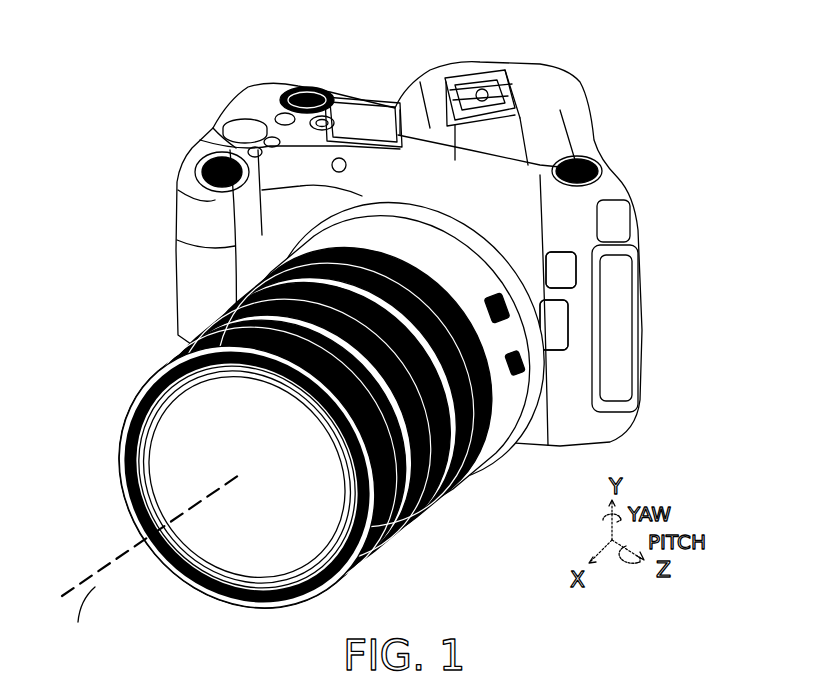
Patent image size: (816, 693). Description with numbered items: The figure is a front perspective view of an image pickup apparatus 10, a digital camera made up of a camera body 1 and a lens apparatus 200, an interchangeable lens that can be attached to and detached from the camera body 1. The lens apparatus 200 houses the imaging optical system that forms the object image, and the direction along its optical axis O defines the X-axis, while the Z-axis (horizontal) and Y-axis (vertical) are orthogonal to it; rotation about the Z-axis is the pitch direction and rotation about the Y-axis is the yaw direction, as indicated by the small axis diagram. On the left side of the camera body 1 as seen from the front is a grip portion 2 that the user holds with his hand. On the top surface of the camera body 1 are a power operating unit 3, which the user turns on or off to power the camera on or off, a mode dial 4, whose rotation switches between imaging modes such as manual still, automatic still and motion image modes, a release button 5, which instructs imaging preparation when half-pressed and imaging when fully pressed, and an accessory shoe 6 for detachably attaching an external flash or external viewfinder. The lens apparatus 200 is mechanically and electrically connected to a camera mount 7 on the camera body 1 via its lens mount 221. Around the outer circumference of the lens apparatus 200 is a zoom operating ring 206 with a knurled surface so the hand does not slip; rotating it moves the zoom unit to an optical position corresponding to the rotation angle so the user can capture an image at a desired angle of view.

The image pickup apparatus 10 is at (386, 337).
The camera body 1 is at (411, 232).
The grip portion 2 is at (185, 285).
The power operating unit 3 is at (590, 164).
The mode dial 4 is at (305, 88).
The release button 5 is at (210, 162).
The accessory shoe 6 is at (471, 92).
The camera mount 7 is at (528, 275).
The lens mount 221 is at (527, 297).
The lens apparatus 200 is at (321, 403).
The zoom operating ring 206 is at (470, 440).